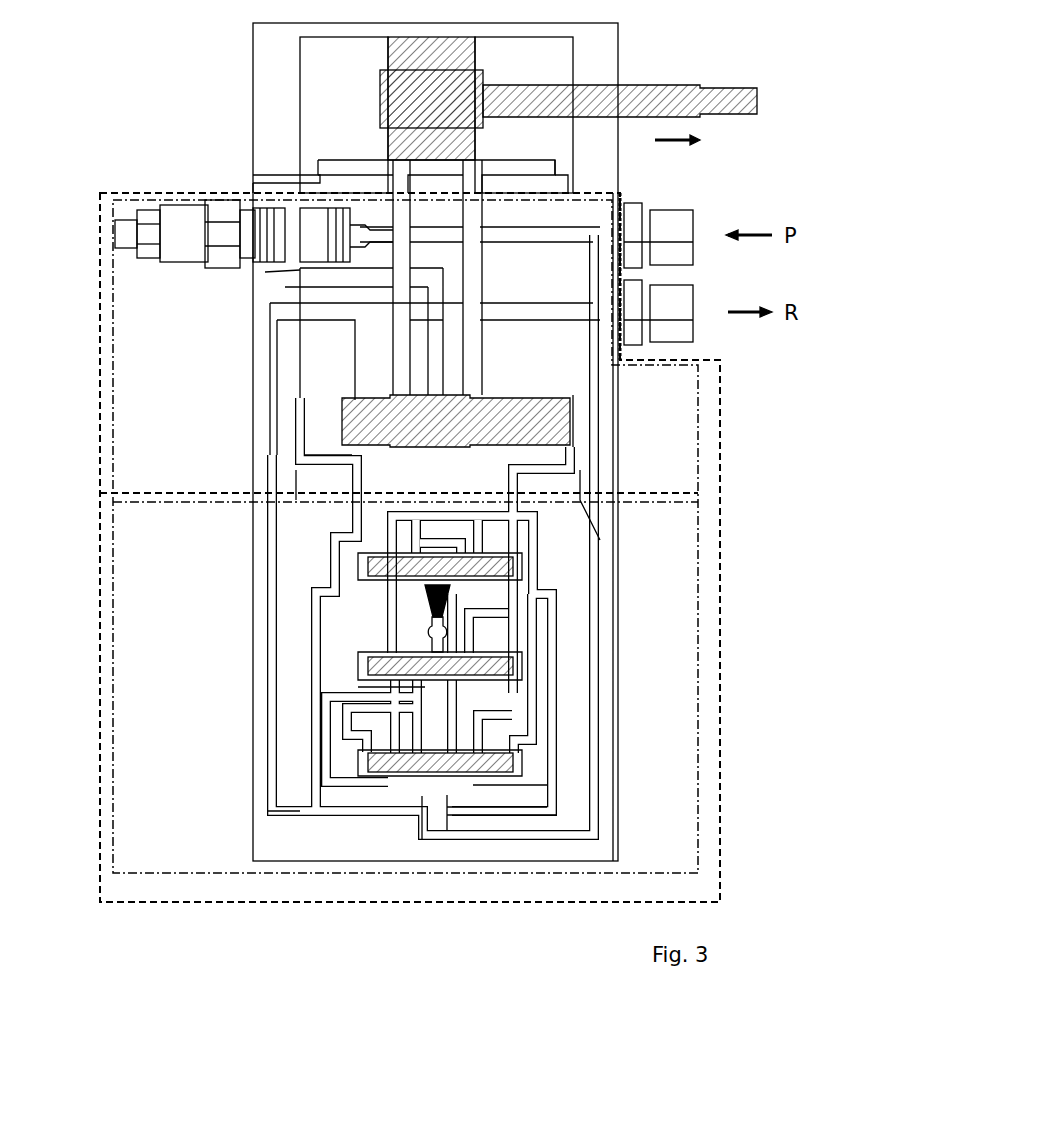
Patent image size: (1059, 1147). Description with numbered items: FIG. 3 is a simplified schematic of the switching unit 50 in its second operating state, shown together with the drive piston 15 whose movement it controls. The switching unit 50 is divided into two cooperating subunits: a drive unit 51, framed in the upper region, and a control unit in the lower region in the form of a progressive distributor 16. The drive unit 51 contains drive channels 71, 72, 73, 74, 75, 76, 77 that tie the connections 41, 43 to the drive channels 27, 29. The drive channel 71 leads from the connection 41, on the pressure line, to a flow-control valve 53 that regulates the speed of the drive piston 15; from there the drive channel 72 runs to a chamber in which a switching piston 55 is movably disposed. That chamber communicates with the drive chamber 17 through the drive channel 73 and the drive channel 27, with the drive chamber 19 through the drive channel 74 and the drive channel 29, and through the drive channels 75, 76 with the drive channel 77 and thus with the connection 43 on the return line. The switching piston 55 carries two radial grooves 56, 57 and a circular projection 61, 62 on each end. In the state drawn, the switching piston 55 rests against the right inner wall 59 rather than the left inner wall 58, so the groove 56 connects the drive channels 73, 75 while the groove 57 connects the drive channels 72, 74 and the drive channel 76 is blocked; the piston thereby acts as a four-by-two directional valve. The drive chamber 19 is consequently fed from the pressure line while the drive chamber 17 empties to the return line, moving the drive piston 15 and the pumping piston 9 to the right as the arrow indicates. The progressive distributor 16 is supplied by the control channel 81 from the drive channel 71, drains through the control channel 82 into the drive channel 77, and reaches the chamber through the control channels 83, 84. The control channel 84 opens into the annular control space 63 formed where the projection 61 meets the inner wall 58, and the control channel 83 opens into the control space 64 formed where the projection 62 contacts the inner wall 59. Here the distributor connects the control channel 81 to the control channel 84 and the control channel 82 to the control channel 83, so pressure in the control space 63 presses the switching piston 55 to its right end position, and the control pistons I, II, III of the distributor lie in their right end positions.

The pumping piston 9 is at (669, 88).
The drive piston 15 is at (445, 112).
The progressive distributor 16 is at (100, 598).
The drive chamber 17 is at (537, 70).
The drive chamber 19 is at (346, 112).
The drive channel 27 is at (580, 180).
The drive channel 29 is at (300, 180).
The connection 41 is at (680, 215).
The connection 43 is at (680, 330).
The switching unit 50 is at (100, 342).
The drive unit 51 is at (113, 370).
The flow-control valve 53 is at (175, 200).
The switching piston 55 is at (456, 421).
The radial groove 56 is at (570, 447).
The radial groove 57 is at (345, 458).
The left inner wall 58 is at (290, 440).
The right inner wall 59 is at (590, 450).
The circular projection 61 is at (300, 425).
The circular projection 62 is at (575, 428).
The control space 63 is at (300, 400).
The control space 64 is at (575, 400).
The drive channel 71 is at (500, 255).
The drive channel 72 is at (265, 275).
The drive channel 73 is at (470, 325).
The drive channel 74 is at (460, 330).
The drive channel 75 is at (510, 360).
The drive channel 76 is at (360, 378).
The drive channel 77 is at (270, 303).
The control channel 81 is at (600, 628).
The control channel 82 is at (272, 800).
The control channel 83 is at (600, 495).
The control channel 84 is at (290, 470).
The control piston I is at (513, 762).
The control piston II is at (513, 665).
The control piston III is at (513, 565).